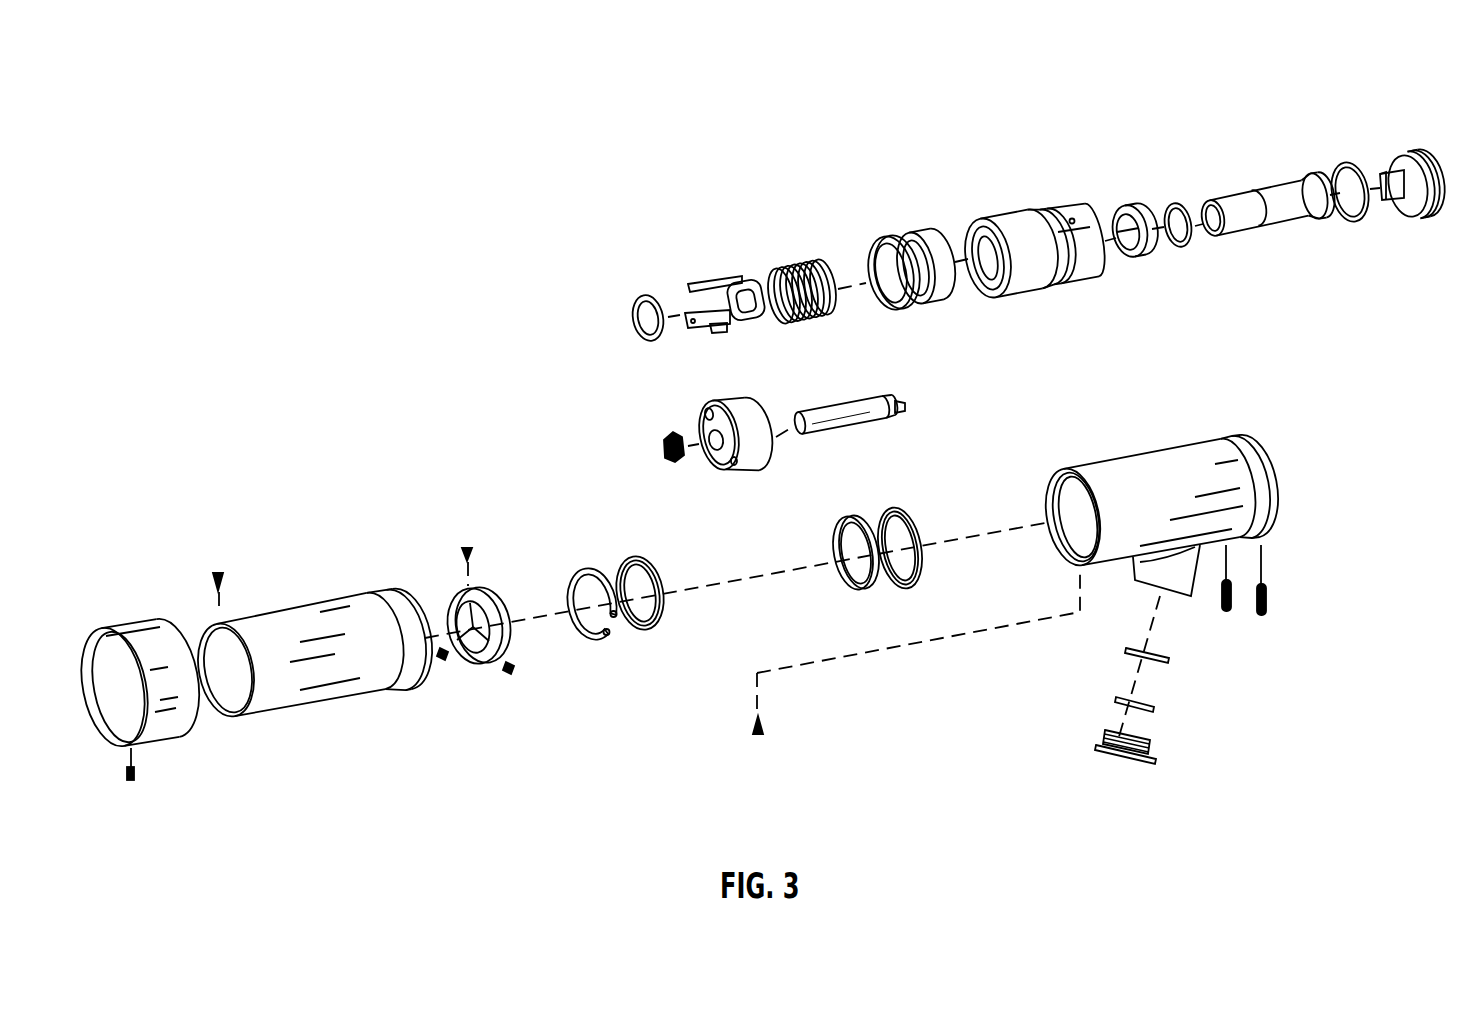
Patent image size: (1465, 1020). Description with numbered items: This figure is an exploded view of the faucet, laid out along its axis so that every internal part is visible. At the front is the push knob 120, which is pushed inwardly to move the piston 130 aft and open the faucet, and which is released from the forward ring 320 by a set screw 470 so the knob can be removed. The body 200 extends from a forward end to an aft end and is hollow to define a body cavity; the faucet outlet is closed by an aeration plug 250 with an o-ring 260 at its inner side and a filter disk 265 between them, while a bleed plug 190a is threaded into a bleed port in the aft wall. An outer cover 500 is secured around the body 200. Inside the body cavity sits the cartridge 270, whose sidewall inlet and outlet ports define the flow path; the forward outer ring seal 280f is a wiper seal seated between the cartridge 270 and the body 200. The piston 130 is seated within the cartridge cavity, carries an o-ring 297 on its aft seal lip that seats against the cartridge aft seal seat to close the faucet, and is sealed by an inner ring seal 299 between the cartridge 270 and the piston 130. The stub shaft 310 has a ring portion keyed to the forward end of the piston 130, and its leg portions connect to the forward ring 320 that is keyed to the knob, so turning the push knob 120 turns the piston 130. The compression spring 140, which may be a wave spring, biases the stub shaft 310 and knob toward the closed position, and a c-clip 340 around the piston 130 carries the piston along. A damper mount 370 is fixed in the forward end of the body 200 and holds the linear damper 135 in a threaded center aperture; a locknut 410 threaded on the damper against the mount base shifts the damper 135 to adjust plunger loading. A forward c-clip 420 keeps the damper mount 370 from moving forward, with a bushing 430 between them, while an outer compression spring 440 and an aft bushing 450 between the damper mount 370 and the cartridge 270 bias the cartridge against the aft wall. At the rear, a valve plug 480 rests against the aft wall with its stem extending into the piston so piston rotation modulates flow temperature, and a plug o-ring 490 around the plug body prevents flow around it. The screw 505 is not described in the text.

The push knob 120 is at (133, 622).
The screw 505 is at (221, 572).
The set screw 470 is at (132, 781).
The outer cover 500 is at (283, 705).
The forward ring 320 is at (483, 588).
The forward c-clip 420 is at (590, 640).
The bushing 430 is at (642, 629).
The outer compression spring 440 is at (852, 590).
The aft bushing 450 is at (912, 587).
The body 200 is at (1236, 435).
The bleed plug 190a is at (1262, 617).
The o-ring 260 is at (1124, 651).
The filter disk 265 is at (1150, 739).
The aeration plug 250 is at (1120, 757).
The c-clip 340 is at (640, 298).
The stub shaft 310 is at (723, 275).
The compression spring 140 is at (800, 262).
The forward outer ring seal 280f is at (918, 233).
The cartridge 270 is at (1036, 212).
The inner ring seal 299 is at (1127, 207).
The o-ring 297 is at (1177, 203).
The piston 130 is at (1275, 180).
The plug o-ring 490 is at (1345, 162).
The valve plug 480 is at (1412, 152).
The damper mount 370 is at (708, 405).
The locknut 410 is at (678, 465).
The linear damper 135 is at (905, 404).